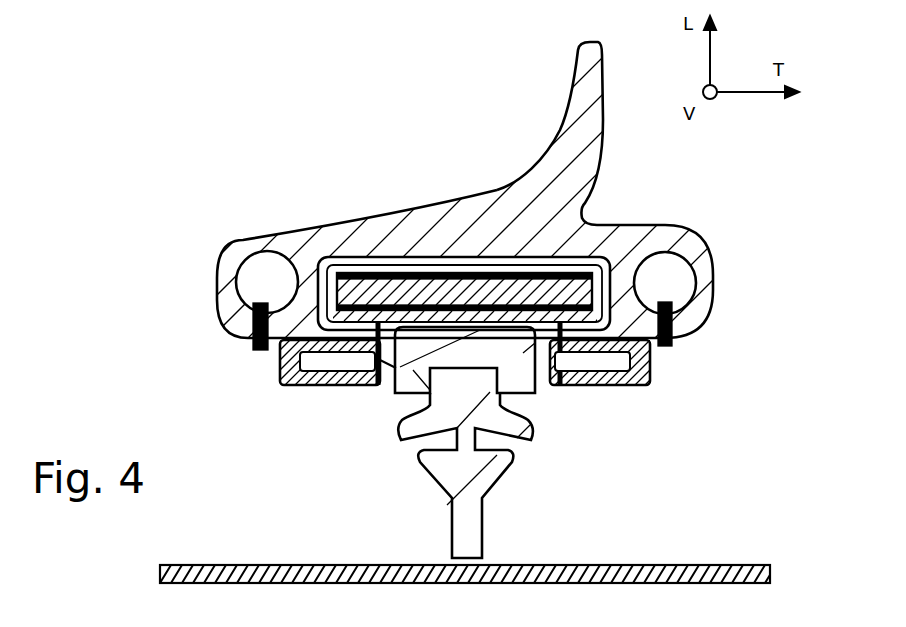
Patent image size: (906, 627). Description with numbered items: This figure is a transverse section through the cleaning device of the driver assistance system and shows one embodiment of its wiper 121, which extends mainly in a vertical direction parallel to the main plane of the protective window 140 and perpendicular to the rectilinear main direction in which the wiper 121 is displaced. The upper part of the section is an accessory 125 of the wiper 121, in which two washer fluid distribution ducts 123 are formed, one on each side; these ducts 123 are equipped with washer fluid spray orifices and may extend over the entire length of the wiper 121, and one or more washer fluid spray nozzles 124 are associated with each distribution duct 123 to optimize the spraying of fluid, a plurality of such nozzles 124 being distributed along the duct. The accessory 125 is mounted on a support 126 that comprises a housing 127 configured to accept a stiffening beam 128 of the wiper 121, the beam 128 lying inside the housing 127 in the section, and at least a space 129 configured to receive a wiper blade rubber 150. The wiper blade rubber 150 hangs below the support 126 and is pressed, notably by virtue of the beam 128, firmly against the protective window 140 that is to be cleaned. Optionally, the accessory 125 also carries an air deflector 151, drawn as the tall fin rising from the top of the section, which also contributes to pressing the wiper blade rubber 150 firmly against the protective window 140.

The wiper 121 is at (232, 128).
The washer fluid distribution duct 123 is at (252, 290).
The washer fluid spray nozzle 124 is at (258, 348).
The accessory 125 is at (453, 190).
The support 126 is at (558, 390).
The housing 127 is at (404, 262).
The stiffening beam 128 is at (483, 283).
The space 129 is at (388, 375).
The protective window 140 is at (712, 563).
The wiper blade rubber 150 is at (405, 472).
The air deflector 151 is at (567, 98).